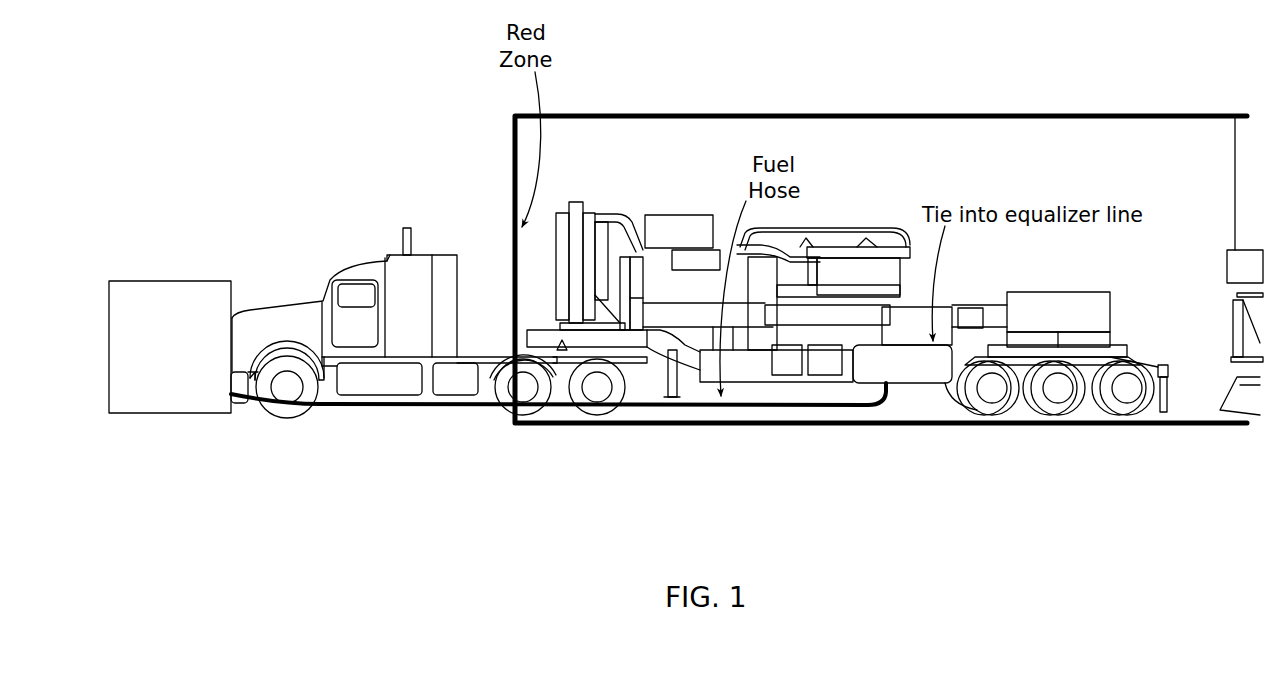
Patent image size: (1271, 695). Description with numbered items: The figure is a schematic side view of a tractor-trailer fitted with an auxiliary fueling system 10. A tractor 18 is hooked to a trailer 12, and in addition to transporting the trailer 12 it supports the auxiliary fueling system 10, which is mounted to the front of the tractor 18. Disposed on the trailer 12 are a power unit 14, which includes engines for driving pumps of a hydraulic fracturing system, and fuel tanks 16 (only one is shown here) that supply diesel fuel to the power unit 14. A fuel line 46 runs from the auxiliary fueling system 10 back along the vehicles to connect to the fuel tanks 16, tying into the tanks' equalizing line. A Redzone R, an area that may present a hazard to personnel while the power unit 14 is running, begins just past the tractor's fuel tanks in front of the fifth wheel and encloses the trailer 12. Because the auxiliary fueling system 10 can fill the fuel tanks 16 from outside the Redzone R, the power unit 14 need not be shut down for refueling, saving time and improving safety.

The auxiliary fueling system 10 is at (171, 280).
The trailer 12 is at (607, 196).
The power unit 14 is at (889, 203).
The fuel tanks 16 is at (910, 378).
The tractor 18 is at (354, 261).
The fuel line 46 is at (537, 420).
The Redzone R is at (800, 112).